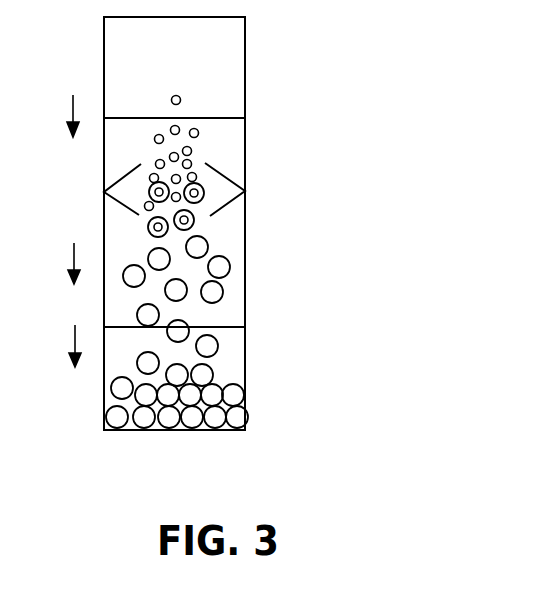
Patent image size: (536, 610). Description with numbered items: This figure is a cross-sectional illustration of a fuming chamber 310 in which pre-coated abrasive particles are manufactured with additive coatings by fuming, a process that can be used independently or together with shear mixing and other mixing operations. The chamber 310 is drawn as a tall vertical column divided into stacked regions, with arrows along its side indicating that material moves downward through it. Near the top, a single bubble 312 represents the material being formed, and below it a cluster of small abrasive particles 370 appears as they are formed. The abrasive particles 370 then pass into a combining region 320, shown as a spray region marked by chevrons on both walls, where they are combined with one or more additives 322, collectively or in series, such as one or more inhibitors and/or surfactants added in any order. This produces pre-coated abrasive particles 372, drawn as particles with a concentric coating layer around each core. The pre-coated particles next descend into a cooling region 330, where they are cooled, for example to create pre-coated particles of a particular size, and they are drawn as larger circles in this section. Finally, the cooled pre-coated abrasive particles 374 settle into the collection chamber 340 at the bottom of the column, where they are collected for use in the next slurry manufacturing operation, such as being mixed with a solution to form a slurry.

The vessel / column 310 is at (245, 70).
The bubble 312 is at (183, 88).
The abrasive particles 370 is at (200, 130).
The additives 322 is at (198, 182).
The combining region 320 is at (245, 180).
The pre-coated abrasive particles 372 is at (208, 238).
The cooling region 330 is at (245, 272).
The collection chamber 340 is at (245, 352).
The cooled pre-coated abrasive particles 374 is at (248, 392).